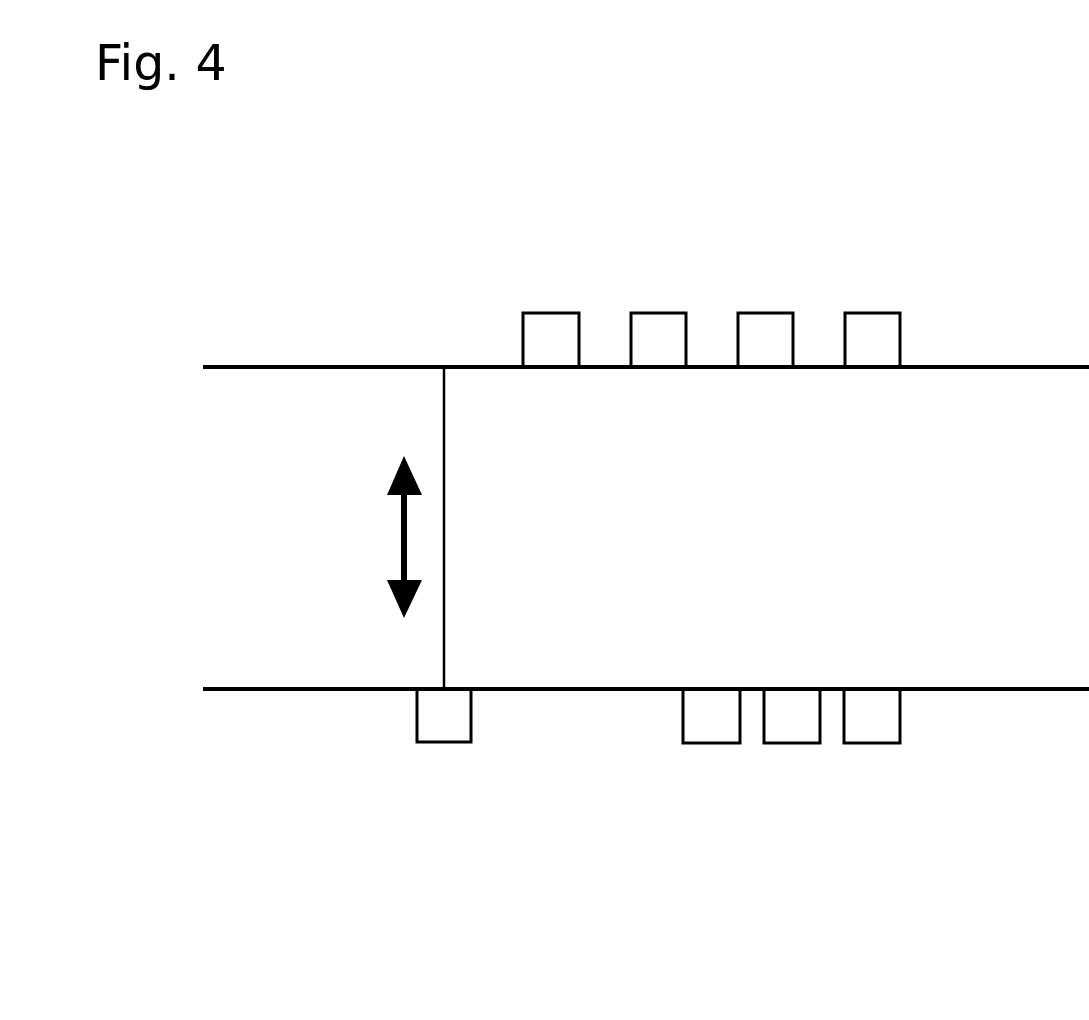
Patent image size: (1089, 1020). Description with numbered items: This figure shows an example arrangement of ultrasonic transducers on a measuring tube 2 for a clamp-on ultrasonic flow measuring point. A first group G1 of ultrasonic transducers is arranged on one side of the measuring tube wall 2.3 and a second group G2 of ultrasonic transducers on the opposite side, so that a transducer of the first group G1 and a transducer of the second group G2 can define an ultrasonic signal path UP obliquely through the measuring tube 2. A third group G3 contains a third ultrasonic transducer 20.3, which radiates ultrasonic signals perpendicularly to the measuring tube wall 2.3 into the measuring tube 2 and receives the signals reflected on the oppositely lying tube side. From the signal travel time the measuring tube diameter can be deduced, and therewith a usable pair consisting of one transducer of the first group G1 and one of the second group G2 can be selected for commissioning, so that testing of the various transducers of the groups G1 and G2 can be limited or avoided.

The measuring tube 2 is at (231, 314).
The measuring tube wall 2.3 is at (338, 367).
The third ultrasonic transducer 20.3 is at (470, 770).
The ultrasonic signal path UP is at (472, 582).
The first group of ultrasonic transducers G1 is at (792, 260).
The second group of ultrasonic transducers G2 is at (845, 768).
The third group G3 is at (417, 770).